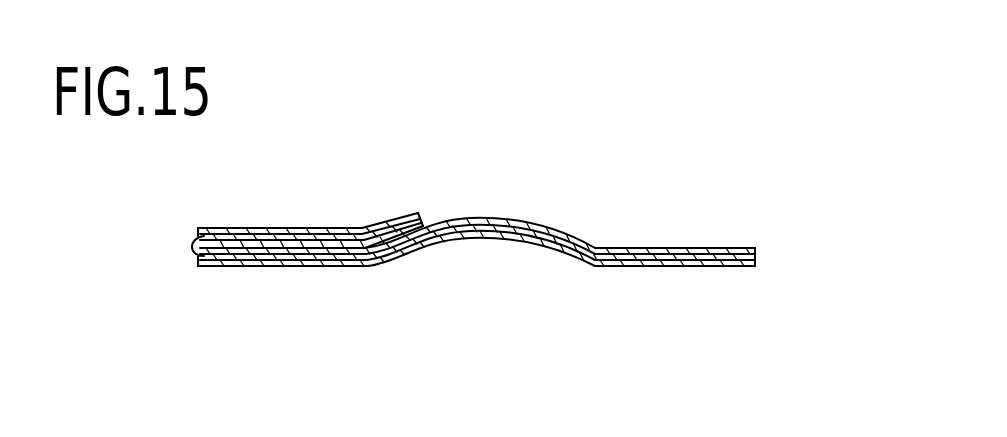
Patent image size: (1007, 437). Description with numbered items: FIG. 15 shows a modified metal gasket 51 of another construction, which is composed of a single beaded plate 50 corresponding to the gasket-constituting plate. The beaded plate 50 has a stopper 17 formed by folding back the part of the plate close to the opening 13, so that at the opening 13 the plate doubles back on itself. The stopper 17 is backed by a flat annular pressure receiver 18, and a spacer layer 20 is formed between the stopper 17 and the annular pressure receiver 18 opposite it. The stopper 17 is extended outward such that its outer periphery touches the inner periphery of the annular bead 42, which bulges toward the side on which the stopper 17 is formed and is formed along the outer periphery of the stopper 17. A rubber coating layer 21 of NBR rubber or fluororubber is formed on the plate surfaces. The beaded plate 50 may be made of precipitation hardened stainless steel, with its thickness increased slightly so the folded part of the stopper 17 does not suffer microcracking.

The opening 13 is at (192, 238).
The stopper 17 is at (258, 235).
The annular pressure receiver 18 is at (318, 263).
The spacer layer 20 is at (252, 262).
The rubber coating layer 21 is at (677, 266).
The annular bead 42 is at (523, 232).
The beaded plate 50 is at (628, 246).
The modified metal gasket 51 is at (716, 241).